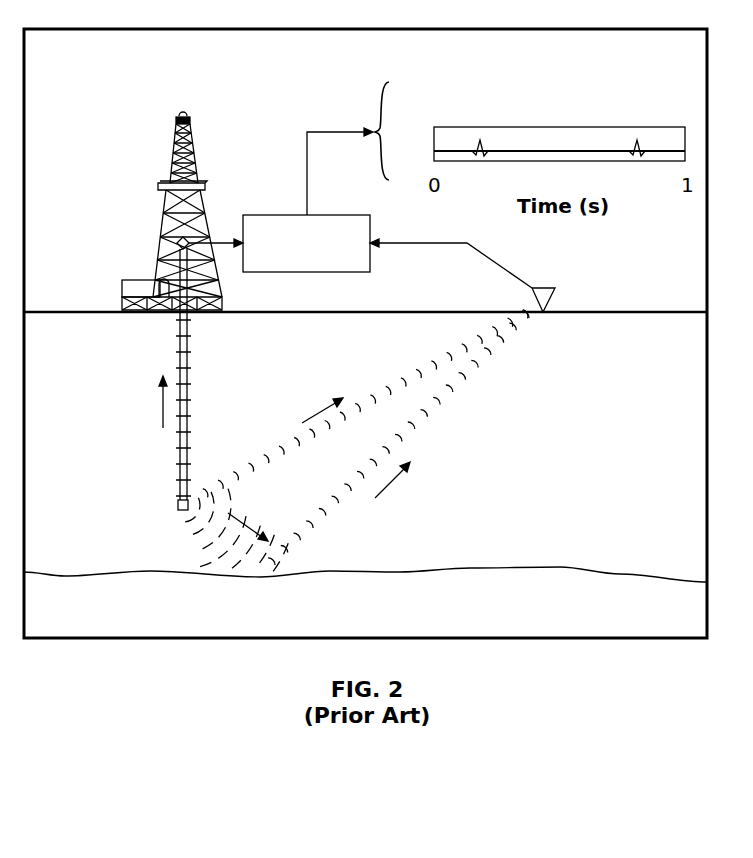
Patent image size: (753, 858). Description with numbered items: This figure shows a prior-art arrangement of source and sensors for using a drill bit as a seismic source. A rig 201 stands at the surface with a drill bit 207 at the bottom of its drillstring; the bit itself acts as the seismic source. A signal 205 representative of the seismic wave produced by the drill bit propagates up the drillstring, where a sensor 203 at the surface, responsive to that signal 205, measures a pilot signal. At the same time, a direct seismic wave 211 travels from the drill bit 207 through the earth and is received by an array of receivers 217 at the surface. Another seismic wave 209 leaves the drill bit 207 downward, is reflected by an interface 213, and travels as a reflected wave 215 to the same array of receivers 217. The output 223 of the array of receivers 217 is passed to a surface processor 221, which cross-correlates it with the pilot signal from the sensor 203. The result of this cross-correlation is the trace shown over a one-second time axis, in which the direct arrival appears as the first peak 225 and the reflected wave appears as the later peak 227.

The rig 201 is at (176, 126).
The sensor 203 is at (163, 238).
The signal propagating up the drillstring 205 is at (162, 400).
The drill bit 207 is at (178, 505).
The seismic wave 209 is at (225, 542).
The direct seismic wave 211 is at (295, 438).
The interface 213 is at (330, 578).
The reflected wave 215 is at (408, 442).
The array of receivers 217 is at (547, 318).
The surface processor 221 is at (300, 215).
The output of the array of receivers 223 is at (418, 242).
The direct arrival 225 is at (480, 150).
The reflected wave arrival 227 is at (637, 150).